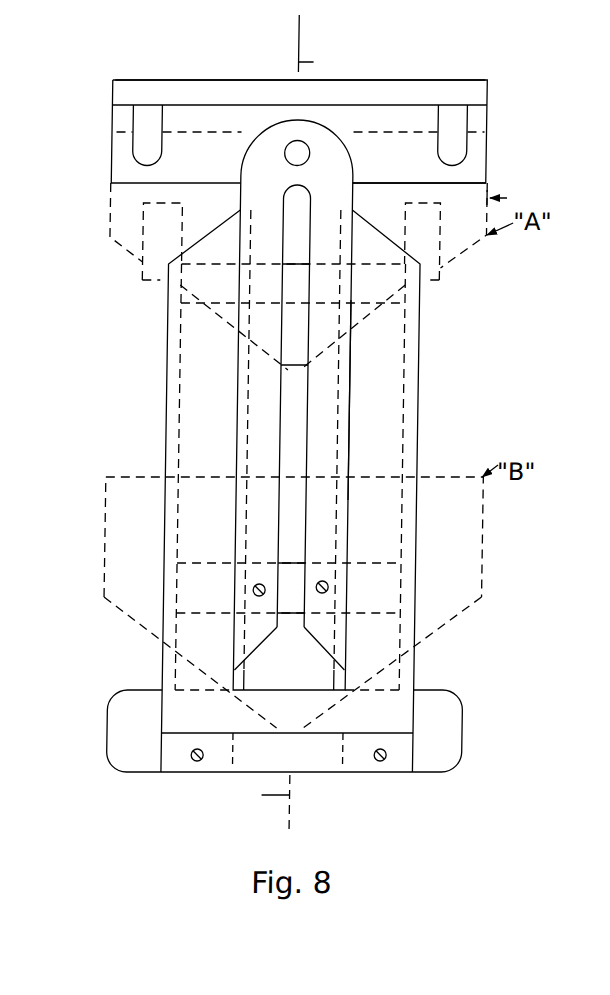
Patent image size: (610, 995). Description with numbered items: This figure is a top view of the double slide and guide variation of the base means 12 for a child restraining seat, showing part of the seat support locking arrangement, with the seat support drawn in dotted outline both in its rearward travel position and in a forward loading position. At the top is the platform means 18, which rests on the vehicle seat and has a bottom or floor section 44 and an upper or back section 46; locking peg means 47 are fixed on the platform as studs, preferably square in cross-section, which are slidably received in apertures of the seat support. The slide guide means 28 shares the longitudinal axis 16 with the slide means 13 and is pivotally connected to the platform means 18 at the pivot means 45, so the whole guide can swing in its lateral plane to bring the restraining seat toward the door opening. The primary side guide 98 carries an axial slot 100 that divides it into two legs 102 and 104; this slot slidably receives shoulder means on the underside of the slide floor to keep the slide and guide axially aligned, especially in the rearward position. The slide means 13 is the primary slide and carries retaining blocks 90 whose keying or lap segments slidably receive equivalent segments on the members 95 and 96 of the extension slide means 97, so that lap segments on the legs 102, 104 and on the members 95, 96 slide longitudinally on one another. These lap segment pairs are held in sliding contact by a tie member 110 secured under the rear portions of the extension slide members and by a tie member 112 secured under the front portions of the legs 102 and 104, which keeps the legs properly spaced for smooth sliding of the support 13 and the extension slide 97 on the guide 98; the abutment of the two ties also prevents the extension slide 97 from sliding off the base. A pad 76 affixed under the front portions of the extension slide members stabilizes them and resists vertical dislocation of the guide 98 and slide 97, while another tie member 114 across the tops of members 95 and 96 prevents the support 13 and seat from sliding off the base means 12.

The base means 12 is at (500, 122).
The slide means 13 is at (74, 593).
The longitudinal axis 16 is at (287, 425).
The platform means 18 is at (386, 73).
The slide guide means 28 is at (114, 436).
The floor section 44 is at (484, 165).
The pivot means 45 is at (296, 151).
The back section 46 is at (117, 95).
The locking peg means 47 is at (146, 127).
The pad 76 is at (454, 717).
The retaining blocks 90 is at (152, 285).
The member of extension slide means 95 is at (201, 375).
The member of extension slide means 96 is at (393, 517).
The extension slide means 97 is at (430, 458).
The primary side guide 98 is at (352, 432).
The axial slot 100 is at (300, 412).
The leg 102 is at (260, 408).
The leg 104 is at (326, 463).
The tie member 110 is at (345, 212).
The tie member 112 is at (296, 563).
The tie member 114 is at (327, 758).